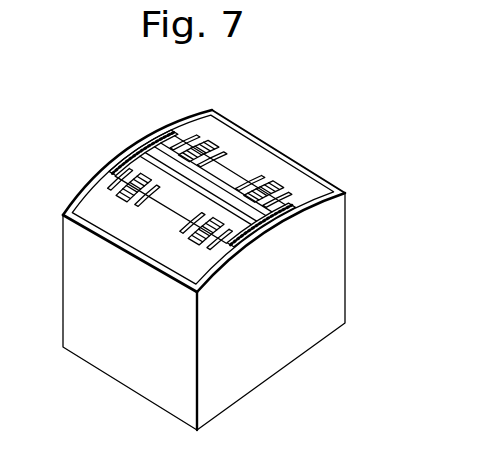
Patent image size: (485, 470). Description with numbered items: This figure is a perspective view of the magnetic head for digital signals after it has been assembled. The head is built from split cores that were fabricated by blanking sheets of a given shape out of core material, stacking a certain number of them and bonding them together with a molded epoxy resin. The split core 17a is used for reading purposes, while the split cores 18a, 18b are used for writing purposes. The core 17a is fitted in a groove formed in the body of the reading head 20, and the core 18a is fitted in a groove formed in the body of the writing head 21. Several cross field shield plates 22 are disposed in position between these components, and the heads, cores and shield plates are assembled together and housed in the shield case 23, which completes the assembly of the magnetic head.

The split core 17a is at (192, 246).
The split core 18a is at (276, 181).
The split core 18b is at (263, 177).
The reading head 20 is at (90, 201).
The writing head 21 is at (185, 131).
The cross field shield plate 22 is at (212, 144).
The shield case 23 is at (279, 352).